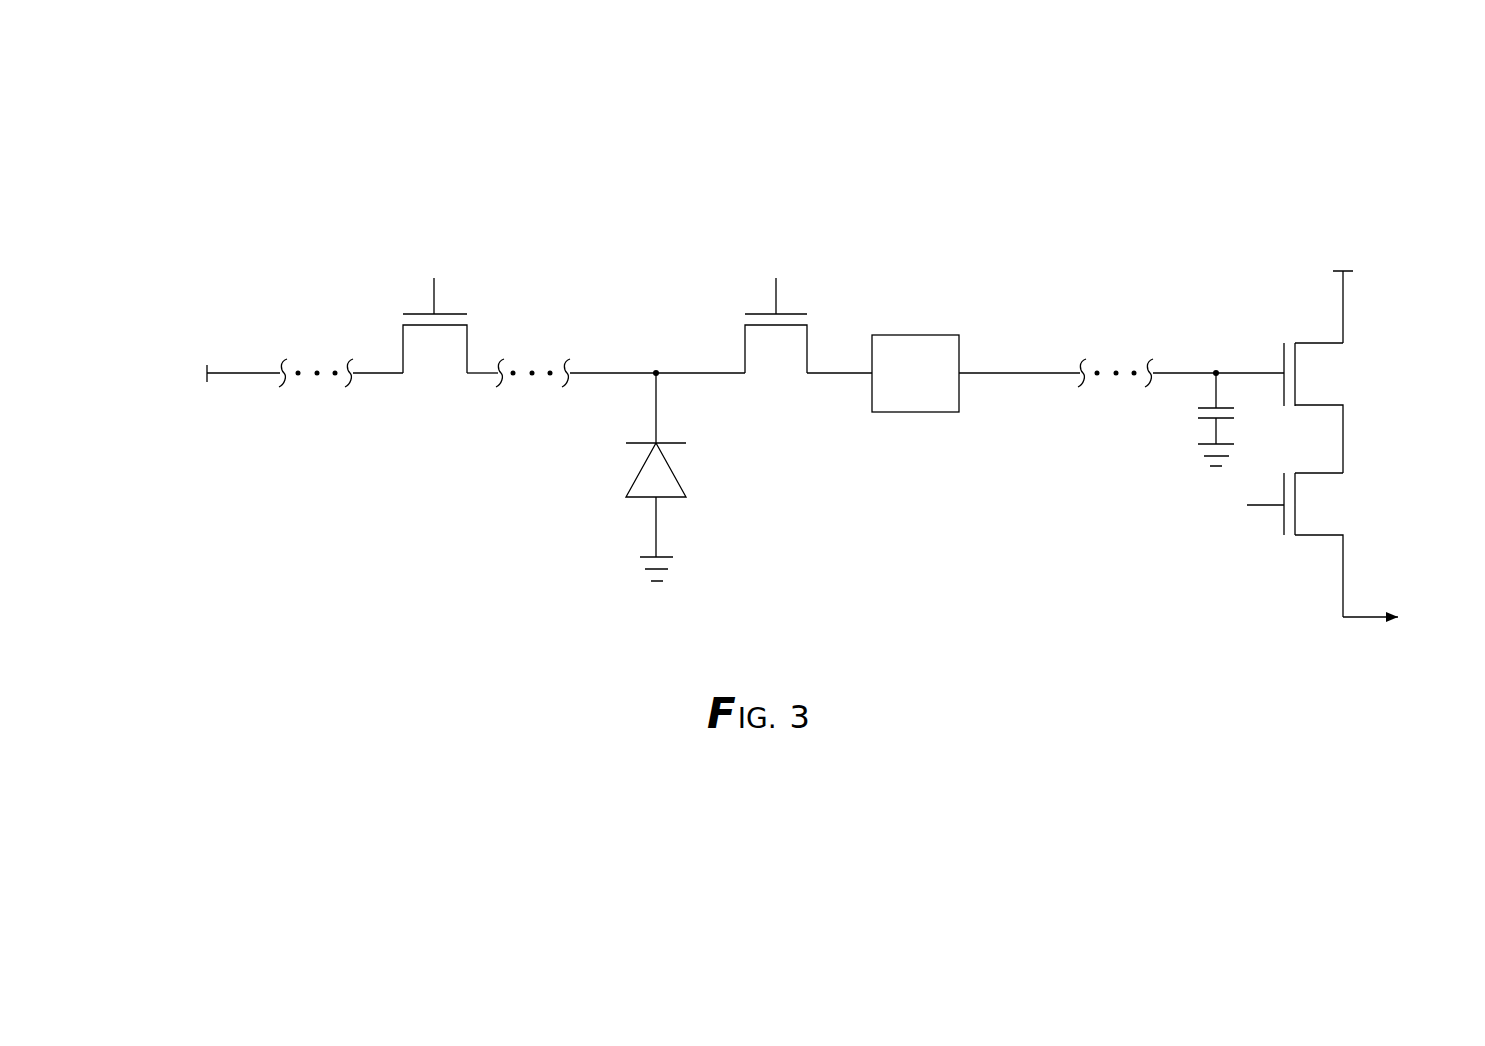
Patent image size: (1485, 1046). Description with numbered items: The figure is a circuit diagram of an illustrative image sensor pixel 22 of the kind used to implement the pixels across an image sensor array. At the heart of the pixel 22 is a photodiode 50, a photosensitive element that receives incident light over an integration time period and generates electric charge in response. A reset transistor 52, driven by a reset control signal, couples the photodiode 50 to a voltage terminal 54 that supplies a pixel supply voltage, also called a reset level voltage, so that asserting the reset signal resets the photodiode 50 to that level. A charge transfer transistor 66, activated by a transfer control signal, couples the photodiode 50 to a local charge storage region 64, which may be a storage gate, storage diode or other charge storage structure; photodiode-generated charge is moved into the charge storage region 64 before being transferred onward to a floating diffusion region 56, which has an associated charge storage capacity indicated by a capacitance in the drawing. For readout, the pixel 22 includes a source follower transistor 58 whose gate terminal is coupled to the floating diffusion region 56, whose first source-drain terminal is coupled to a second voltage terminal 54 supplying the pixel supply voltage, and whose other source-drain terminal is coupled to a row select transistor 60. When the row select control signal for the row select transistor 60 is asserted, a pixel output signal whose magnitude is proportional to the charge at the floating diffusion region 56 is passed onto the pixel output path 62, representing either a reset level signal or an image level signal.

The image sensor pixel 22 is at (1140, 138).
The photodiode 50 is at (612, 505).
The reset transistor 52 is at (387, 305).
The voltage terminal 54 is at (205, 345).
The floating diffusion region 56 is at (1213, 348).
The source follower transistor 58 is at (1337, 375).
The row select transistor 60 is at (1340, 508).
The pixel output path 62 is at (1373, 614).
The local charge storage region 64 is at (935, 335).
The charge transfer transistor 66 is at (818, 310).